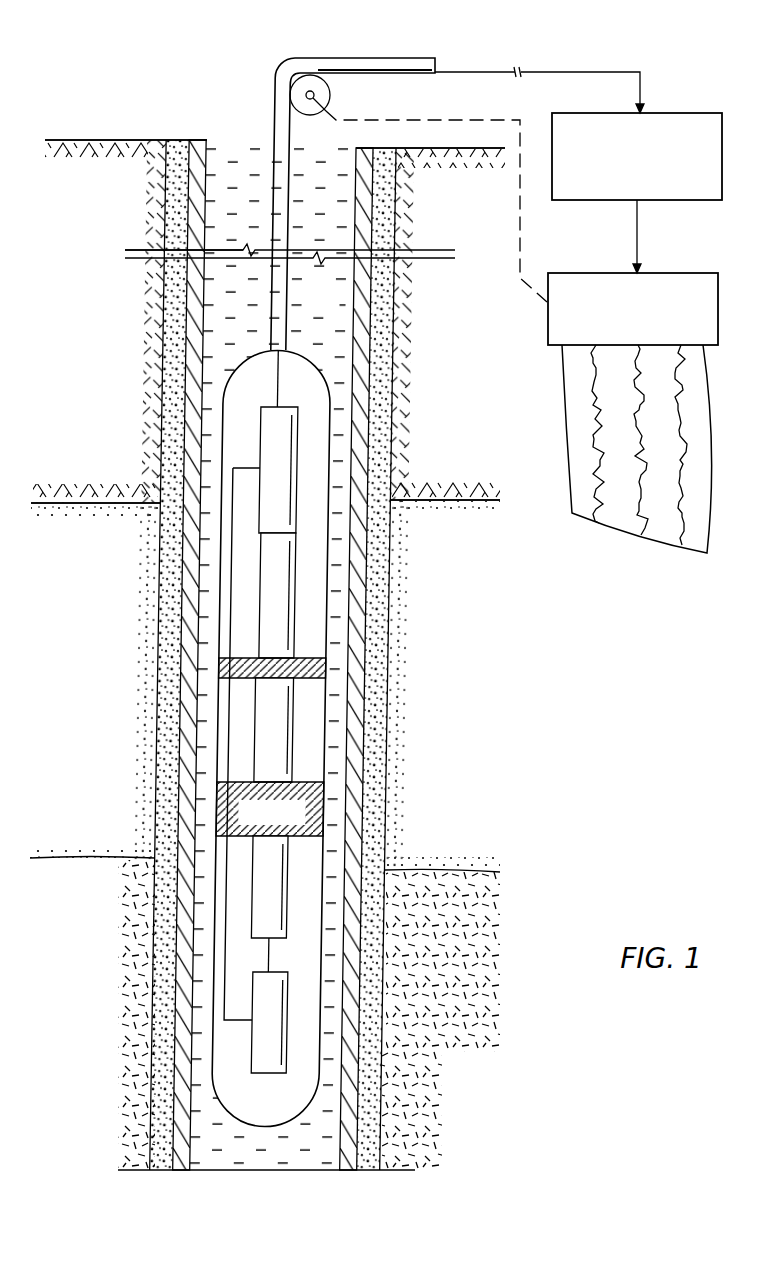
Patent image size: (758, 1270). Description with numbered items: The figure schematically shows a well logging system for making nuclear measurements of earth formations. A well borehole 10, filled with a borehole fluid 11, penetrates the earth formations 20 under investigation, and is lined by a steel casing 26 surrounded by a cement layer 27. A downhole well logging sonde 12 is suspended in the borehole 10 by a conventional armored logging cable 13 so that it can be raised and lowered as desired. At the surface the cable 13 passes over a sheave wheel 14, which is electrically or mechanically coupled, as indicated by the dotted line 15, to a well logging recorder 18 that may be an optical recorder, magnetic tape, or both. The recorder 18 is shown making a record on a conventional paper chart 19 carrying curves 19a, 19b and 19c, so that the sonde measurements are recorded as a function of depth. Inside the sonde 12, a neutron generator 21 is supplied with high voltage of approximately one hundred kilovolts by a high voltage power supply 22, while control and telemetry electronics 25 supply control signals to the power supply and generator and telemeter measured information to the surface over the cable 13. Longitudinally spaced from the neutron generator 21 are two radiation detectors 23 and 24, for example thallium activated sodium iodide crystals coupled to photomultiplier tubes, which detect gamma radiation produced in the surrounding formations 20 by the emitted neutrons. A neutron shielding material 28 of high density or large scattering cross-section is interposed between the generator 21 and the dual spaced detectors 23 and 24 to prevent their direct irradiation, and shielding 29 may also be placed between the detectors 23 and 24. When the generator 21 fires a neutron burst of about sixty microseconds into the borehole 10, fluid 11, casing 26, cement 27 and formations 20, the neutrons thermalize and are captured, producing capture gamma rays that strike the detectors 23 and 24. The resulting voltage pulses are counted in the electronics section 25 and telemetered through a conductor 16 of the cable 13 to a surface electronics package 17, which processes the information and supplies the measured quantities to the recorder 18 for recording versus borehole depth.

The well borehole 10 is at (226, 121).
The borehole fluid 11 is at (313, 310).
The downhole well logging sonde 12 is at (222, 405).
The armored logging cable 13 is at (356, 58).
The sheave wheel 14 is at (331, 97).
The dotted line 15 is at (462, 120).
The conductor 16 is at (580, 72).
The surface electronics package 17 is at (711, 113).
The well logging recorder 18 is at (698, 273).
The paper chart 19 is at (606, 476).
The curve 19a is at (598, 437).
The curve 19b is at (640, 510).
The curve 19c is at (686, 510).
The earth formations 20 is at (79, 671).
The neutron generator 21 is at (269, 887).
The high voltage power supply 22 is at (269, 1022).
The radiation detector 23 is at (274, 730).
The radiation detector 24 is at (277, 595).
The control and telemetry electronics 25 is at (278, 470).
The steel casing 26 is at (388, 467).
The cement layer 27 is at (366, 742).
The neutron shielding material 28 is at (270, 809).
The shielding 29 is at (272, 668).